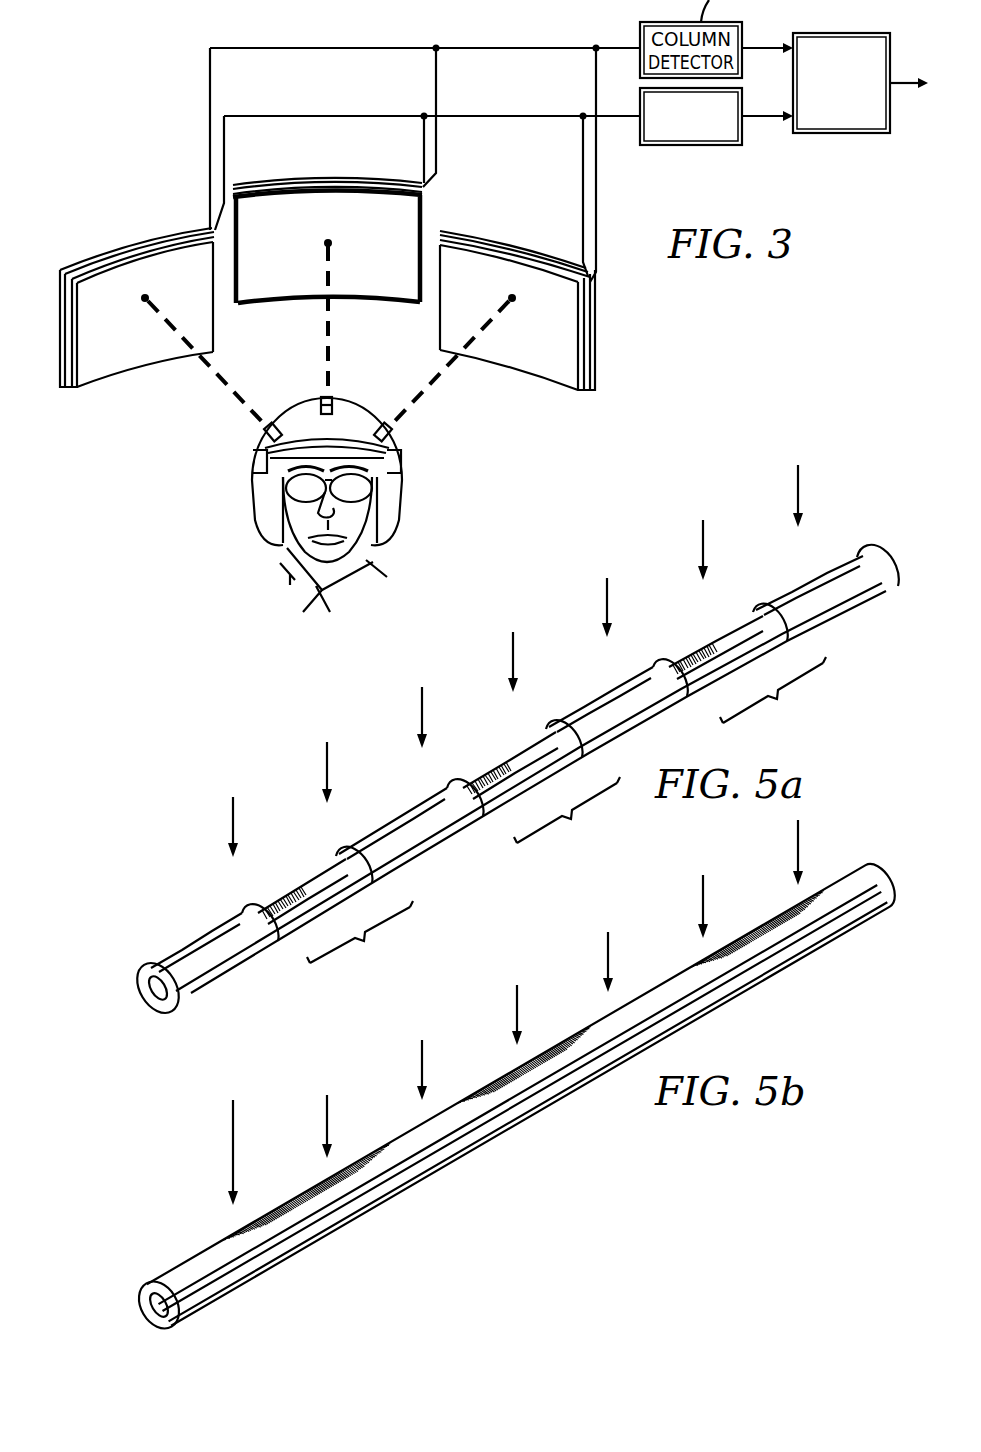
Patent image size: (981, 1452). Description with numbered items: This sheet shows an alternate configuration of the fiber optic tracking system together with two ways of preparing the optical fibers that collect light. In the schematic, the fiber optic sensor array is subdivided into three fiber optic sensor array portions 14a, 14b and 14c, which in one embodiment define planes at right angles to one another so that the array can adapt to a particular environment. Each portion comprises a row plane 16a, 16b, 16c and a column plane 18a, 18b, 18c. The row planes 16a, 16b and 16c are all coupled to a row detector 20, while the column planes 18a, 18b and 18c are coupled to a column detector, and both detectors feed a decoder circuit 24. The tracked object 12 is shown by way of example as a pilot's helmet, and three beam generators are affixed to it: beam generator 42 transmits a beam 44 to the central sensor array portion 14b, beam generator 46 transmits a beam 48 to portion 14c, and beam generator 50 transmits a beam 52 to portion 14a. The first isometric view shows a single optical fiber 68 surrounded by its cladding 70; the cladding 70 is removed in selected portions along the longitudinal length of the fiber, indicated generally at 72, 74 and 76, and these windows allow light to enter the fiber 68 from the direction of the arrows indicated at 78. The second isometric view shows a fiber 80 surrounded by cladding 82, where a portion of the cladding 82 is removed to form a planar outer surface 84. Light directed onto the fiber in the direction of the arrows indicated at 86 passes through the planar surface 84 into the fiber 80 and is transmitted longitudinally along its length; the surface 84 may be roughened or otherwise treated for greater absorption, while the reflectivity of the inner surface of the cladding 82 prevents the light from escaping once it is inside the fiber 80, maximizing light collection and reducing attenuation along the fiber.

In FIG. 3, the object 12 is at (259, 508).
In FIG. 3, the fiber optic sensor array portion 14a is at (534, 372).
In FIG. 3, the fiber optic sensor array portion 14b is at (376, 305).
In FIG. 3, the fiber optic sensor array portion 14c is at (106, 381).
In FIG. 3, the row plane 16a is at (535, 247).
In FIG. 3, the row plane 16b is at (348, 186).
In FIG. 3, the row plane 16c is at (96, 261).
In FIG. 3, the column plane 18a is at (483, 237).
In FIG. 3, the column plane 18b is at (282, 187).
In FIG. 3, the column plane 18c is at (133, 245).
In FIG. 3, the row detector 20 is at (692, 146).
In FIG. 3, the decoder circuit 24 is at (862, 134).
In FIG. 3, the beam generator 42 is at (320, 402).
In FIG. 3, the beam 44 is at (323, 331).
In FIG. 3, the beam generator 46 is at (262, 432).
In FIG. 3, the beam 48 is at (220, 380).
In FIG. 3, the beam generator 50 is at (396, 433).
In FIG. 3, the beam 52 is at (442, 386).
In FIG. 5A, the optical fiber 68 is at (151, 1003).
In FIG. 5A, the cladding 70 is at (141, 975).
In FIG. 5A, the section with cladding removed 72 is at (360, 938).
In FIG. 5A, the section with cladding removed 74 is at (567, 812).
In FIG. 5A, the section with cladding removed 76 is at (773, 692).
In FIG. 5A, the arrows indicating light direction 78 is at (327, 758).
In FIG. 5B, the fiber 80 is at (149, 1311).
In FIG. 5B, the cladding 82 is at (476, 1089).
In FIG. 5B, the planar outer surface 84 is at (196, 1251).
In FIG. 5B, the arrows indicating light direction 86 is at (422, 1060).